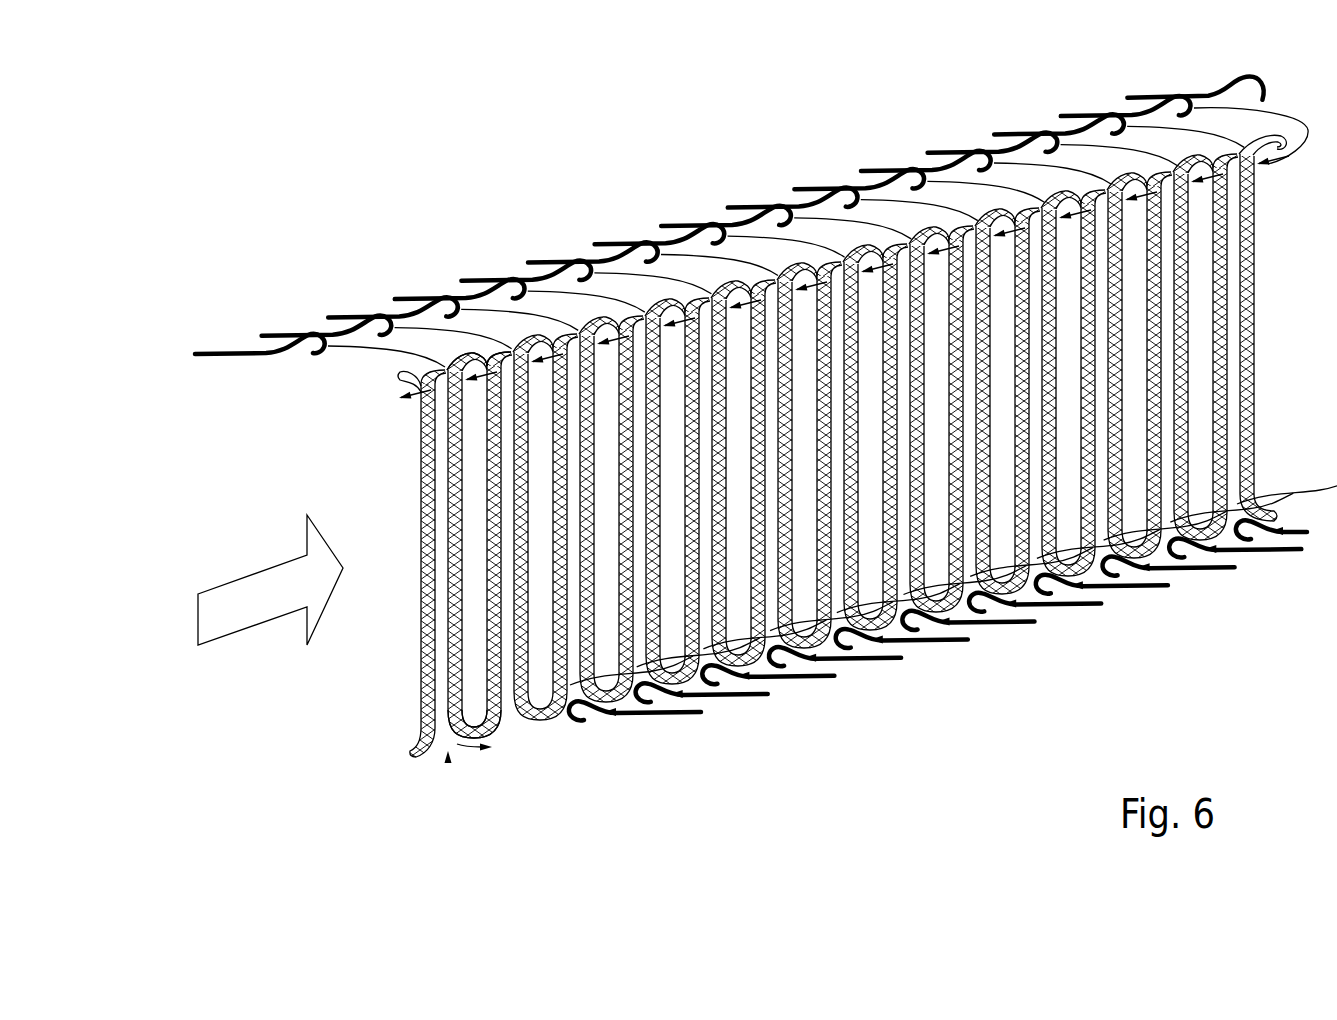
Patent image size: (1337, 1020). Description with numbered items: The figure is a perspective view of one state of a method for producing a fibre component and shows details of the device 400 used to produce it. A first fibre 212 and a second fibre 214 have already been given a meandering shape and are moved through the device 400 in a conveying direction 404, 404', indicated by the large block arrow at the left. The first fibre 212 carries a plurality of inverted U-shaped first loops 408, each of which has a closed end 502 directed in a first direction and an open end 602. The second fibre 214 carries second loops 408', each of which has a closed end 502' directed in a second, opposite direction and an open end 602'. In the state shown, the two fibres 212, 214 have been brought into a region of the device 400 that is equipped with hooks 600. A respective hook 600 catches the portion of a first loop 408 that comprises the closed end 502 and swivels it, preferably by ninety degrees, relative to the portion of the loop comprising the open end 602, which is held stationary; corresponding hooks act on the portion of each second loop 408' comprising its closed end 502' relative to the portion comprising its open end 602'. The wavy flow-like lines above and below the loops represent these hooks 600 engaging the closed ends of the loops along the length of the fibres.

The device 400 is at (393, 128).
The second fibre 214 is at (666, 298).
The first fibre 212 is at (412, 752).
The first loop 408 is at (506, 288).
The second loop 408' is at (504, 750).
The closed end 502 is at (467, 301).
The closed end 502' is at (493, 765).
The hook 600 is at (219, 350).
The open end 602 is at (451, 790).
The open end 602' is at (374, 322).
The conveying direction 404 is at (270, 607).
The conveying direction 404' is at (270, 607).